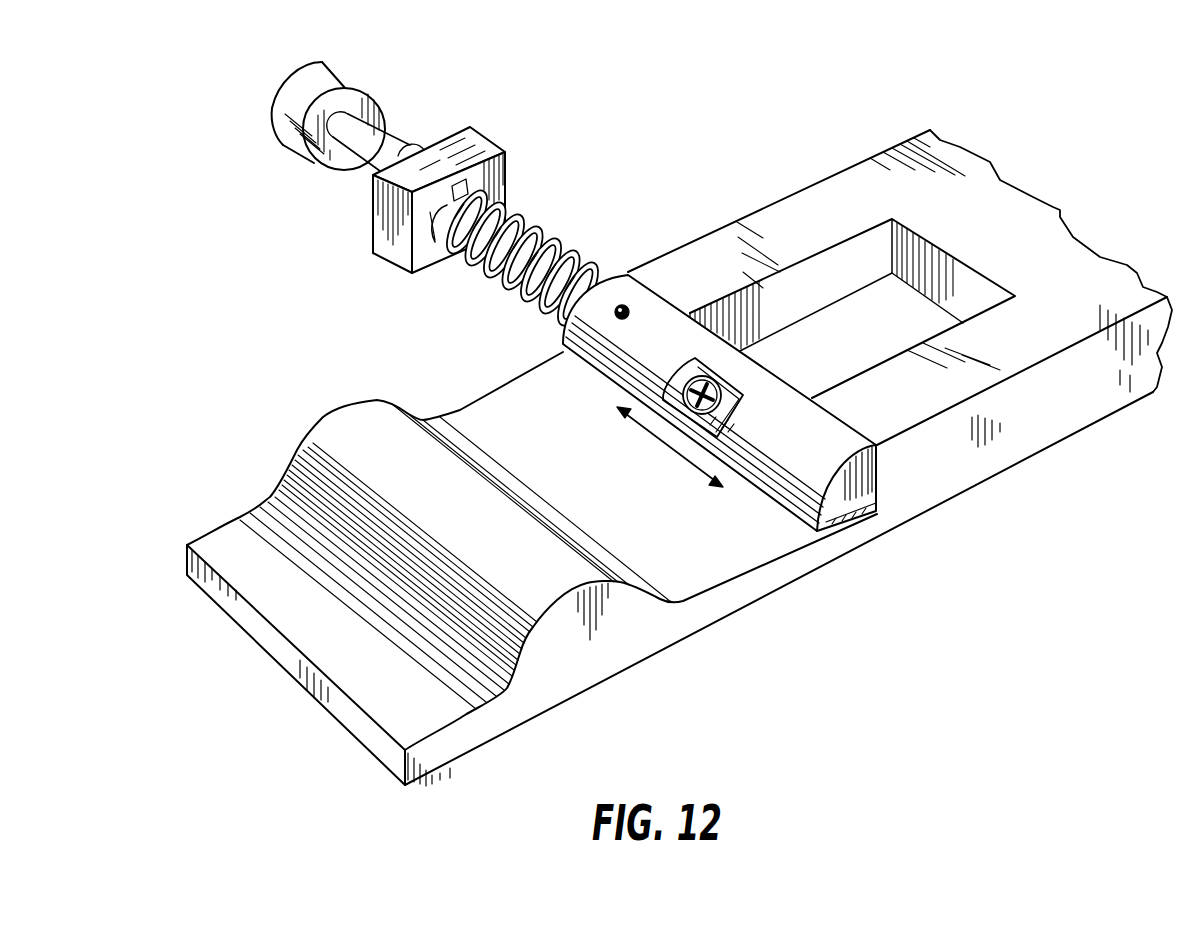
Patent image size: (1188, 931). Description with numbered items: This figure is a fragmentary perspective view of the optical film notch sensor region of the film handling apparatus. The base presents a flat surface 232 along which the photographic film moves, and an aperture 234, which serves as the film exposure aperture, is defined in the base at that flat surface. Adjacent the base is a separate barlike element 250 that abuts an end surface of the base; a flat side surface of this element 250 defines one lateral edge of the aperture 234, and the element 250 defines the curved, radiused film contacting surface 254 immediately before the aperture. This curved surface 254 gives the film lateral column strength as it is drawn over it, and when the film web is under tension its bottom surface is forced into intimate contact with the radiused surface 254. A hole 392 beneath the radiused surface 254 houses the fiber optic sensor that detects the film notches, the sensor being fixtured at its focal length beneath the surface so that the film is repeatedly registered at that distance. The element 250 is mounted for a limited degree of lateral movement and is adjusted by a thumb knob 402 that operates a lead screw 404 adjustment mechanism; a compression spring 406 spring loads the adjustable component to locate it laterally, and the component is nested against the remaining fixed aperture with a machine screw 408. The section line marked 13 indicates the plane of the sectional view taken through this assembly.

The flat surface 232 is at (1036, 237).
The aperture 234 is at (923, 327).
The barlike element 250 is at (842, 498).
The curved film contacting surface 254 is at (800, 466).
The hole 392 is at (630, 316).
The thumb knob 402 is at (272, 104).
The lead screw 404 is at (575, 270).
The compression spring 406 is at (517, 214).
The machine screw 408 is at (706, 382).
The section line 13- 13 is at (675, 288).